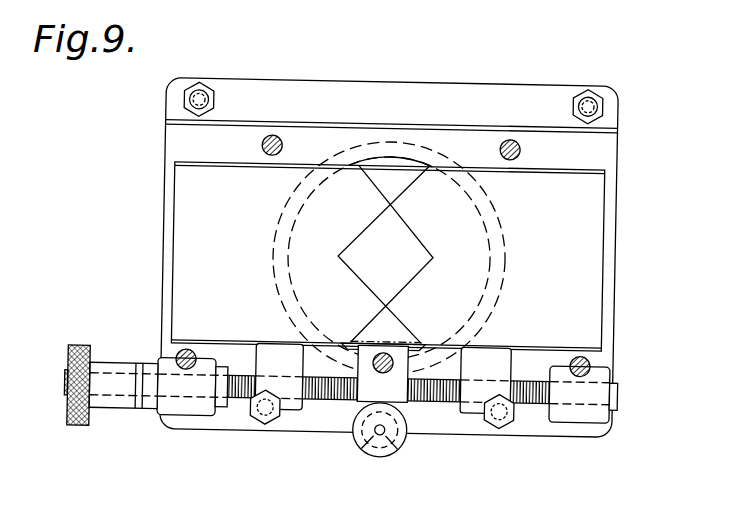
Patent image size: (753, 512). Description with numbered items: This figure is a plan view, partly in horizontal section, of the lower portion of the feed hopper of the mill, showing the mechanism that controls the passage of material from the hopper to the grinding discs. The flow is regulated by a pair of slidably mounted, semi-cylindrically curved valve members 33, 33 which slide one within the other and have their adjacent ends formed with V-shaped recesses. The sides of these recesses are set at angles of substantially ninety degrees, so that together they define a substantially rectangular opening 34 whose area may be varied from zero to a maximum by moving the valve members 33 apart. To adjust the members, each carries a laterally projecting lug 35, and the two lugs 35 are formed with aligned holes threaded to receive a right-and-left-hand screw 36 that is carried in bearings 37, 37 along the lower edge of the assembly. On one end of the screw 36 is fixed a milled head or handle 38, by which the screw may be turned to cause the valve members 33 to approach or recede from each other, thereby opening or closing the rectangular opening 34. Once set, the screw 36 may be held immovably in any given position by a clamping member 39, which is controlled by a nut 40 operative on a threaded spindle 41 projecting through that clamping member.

The valve member 33 is at (173, 246).
The rectangular opening 34 is at (385, 254).
The laterally projecting lug 35 is at (300, 414).
The right-and-left-hand screw 36 is at (436, 404).
The bearing 37 is at (191, 412).
The milled head 38 is at (81, 433).
The clamping member 39 is at (382, 374).
The nut 40 is at (371, 438).
The threaded spindle 41 is at (386, 436).